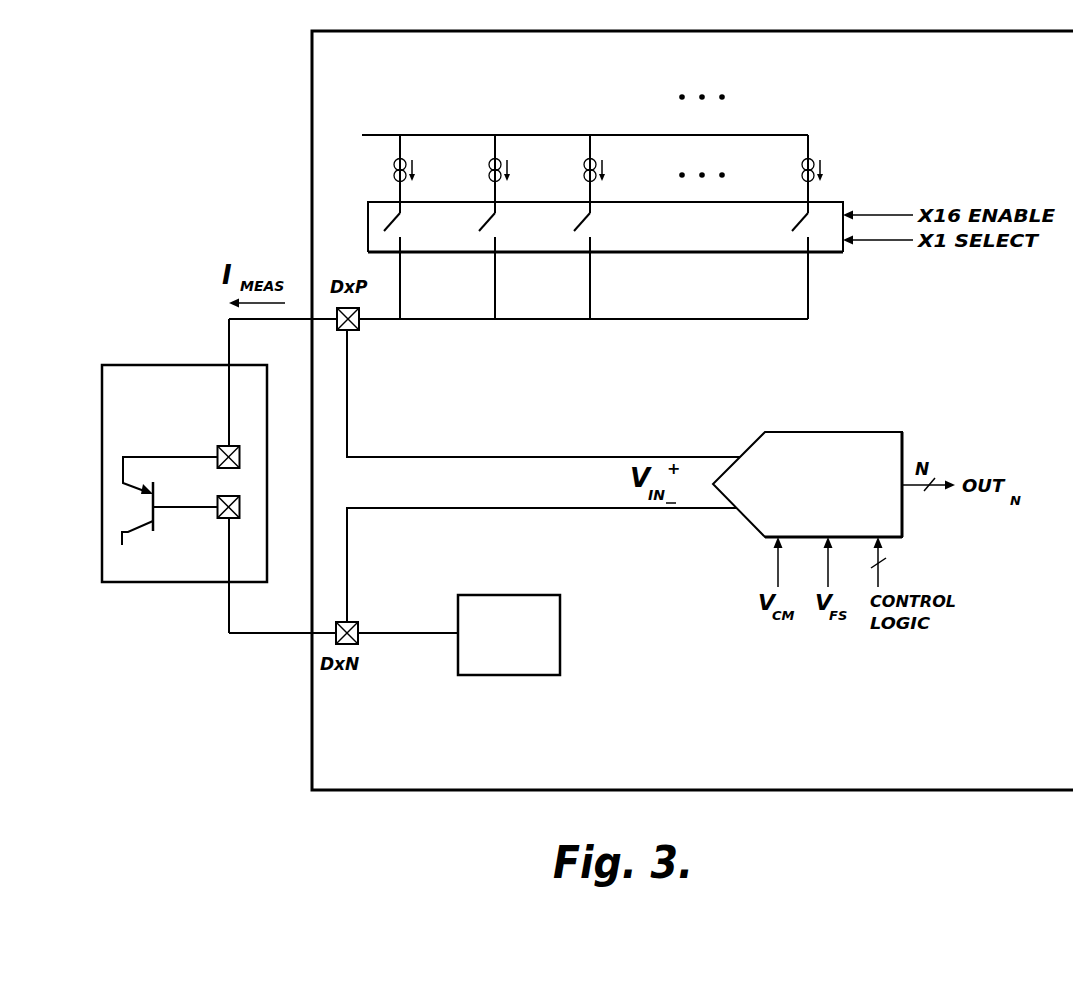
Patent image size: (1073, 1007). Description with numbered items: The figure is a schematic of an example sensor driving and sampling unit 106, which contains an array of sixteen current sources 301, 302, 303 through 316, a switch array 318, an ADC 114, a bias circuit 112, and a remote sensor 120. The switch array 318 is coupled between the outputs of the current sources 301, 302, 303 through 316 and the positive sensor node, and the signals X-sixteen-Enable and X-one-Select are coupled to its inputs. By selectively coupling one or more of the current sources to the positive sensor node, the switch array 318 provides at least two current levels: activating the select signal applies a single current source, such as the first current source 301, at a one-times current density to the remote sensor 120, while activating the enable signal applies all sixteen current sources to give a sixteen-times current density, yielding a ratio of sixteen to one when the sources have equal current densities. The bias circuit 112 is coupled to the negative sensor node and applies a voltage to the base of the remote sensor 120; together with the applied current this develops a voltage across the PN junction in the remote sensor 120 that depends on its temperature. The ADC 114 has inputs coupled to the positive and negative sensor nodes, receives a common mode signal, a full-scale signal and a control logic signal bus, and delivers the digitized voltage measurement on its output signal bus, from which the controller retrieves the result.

The current source 301 is at (414, 140).
The current source 302 is at (509, 140).
The current source 303 is at (604, 140).
The current source 316 is at (828, 140).
The switch array 318 is at (692, 252).
The remote sensor 120 is at (202, 566).
The ADC 114 is at (862, 526).
The bias circuit 112 is at (510, 676).
The sensor driving and sampling unit 106 is at (947, 760).